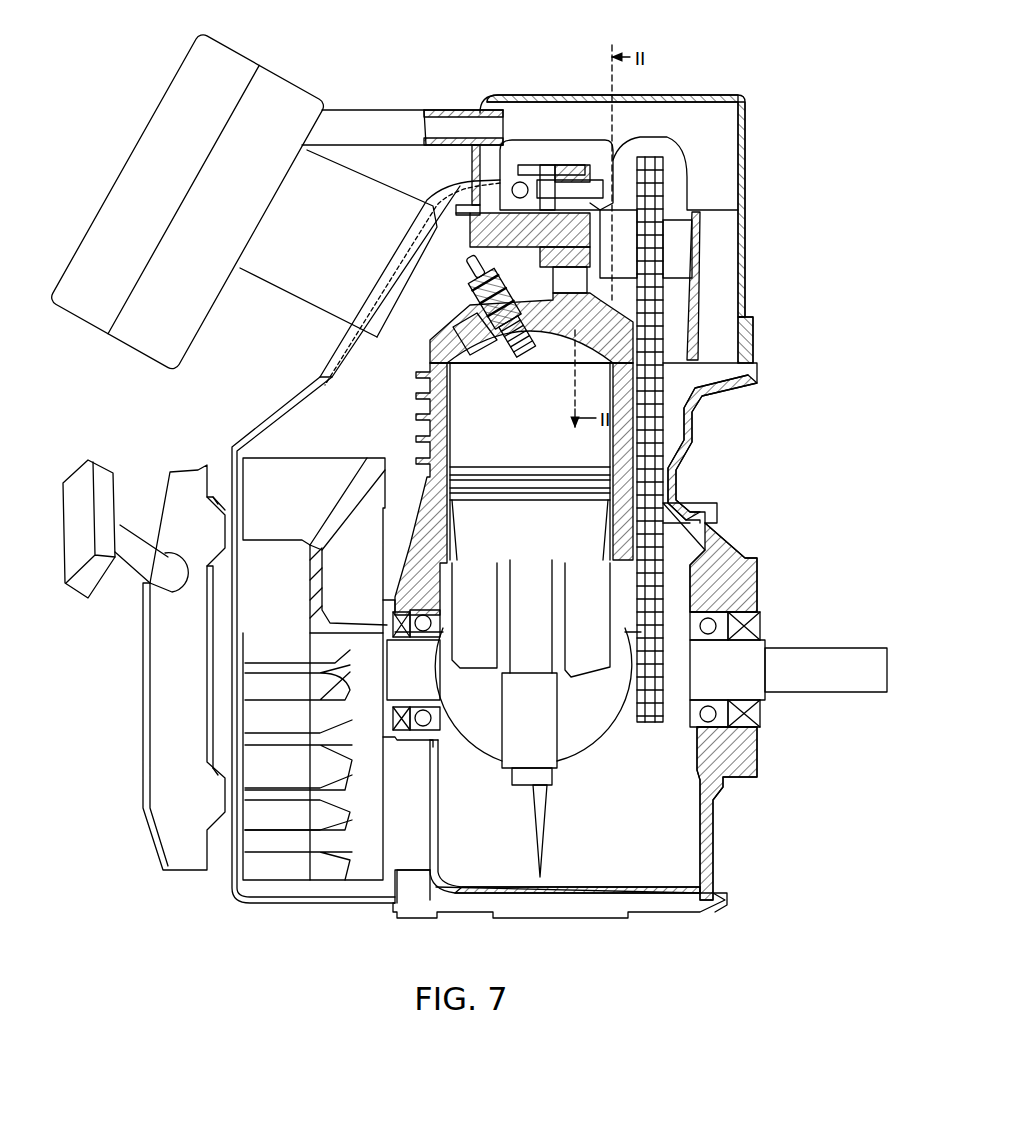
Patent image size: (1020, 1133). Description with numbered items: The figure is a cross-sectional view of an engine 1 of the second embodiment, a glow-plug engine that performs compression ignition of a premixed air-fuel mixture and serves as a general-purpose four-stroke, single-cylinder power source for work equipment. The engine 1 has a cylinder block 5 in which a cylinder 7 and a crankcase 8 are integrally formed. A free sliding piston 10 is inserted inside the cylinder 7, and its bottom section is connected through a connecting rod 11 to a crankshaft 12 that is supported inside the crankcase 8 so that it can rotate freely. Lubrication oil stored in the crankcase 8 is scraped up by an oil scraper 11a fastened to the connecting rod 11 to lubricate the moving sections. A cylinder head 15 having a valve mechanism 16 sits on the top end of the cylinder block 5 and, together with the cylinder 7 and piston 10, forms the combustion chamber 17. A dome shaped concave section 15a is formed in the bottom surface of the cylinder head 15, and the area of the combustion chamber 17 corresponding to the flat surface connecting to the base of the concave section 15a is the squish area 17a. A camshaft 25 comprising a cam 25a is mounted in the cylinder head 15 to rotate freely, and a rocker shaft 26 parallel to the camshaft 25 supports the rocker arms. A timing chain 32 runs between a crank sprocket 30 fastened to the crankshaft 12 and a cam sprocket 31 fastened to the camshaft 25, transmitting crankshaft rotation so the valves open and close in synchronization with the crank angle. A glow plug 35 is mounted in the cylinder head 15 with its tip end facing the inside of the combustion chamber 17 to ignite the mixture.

The engine 1 is at (810, 78).
The cylinder block 5 is at (371, 440).
The cylinder 7 is at (412, 407).
The crankcase 8 is at (420, 891).
The piston 10 is at (607, 505).
The connecting rod 11 is at (533, 642).
The oil scraper 11a is at (548, 822).
The crankshaft 12 is at (825, 658).
The cylinder head 15 is at (452, 322).
The concave section 15a is at (477, 333).
The valve mechanism 16 is at (578, 132).
The combustion chamber 17 is at (508, 452).
The squish area 17a is at (455, 374).
The camshaft 25 is at (685, 253).
The cam 25a is at (615, 223).
The rocker shaft 26 is at (560, 162).
The crank sprocket 30 is at (670, 716).
The cam sprocket 31 is at (668, 184).
The timing chain 32 is at (665, 416).
The glow plug 35 is at (421, 214).